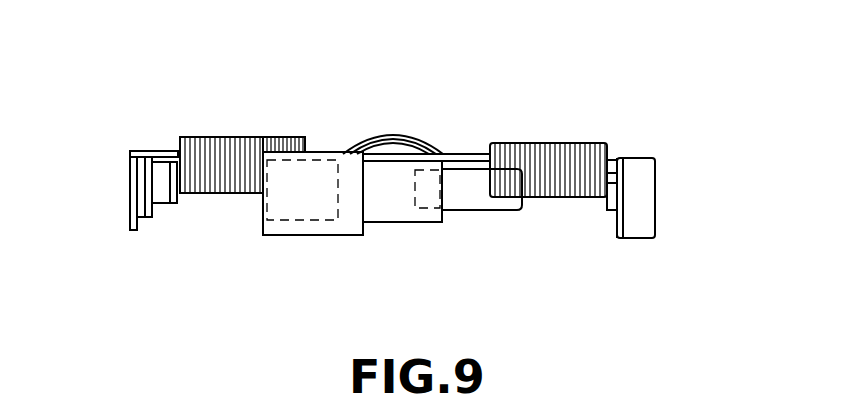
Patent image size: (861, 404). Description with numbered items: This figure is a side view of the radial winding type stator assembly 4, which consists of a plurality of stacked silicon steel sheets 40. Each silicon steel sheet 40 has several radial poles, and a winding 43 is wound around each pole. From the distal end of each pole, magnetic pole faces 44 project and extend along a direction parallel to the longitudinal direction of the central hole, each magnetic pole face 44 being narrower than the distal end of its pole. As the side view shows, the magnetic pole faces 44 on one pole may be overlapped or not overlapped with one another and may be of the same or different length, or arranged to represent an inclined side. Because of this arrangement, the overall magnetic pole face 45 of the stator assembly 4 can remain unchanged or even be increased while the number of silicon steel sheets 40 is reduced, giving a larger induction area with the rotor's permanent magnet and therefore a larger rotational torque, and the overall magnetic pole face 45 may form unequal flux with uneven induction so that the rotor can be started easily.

The stator assembly 4 is at (351, 120).
The silicon steel sheet 40 is at (470, 153).
The winding 43 is at (233, 147).
The magnetic pole face 44 is at (132, 213).
The overall magnetic pole face 45 is at (112, 148).